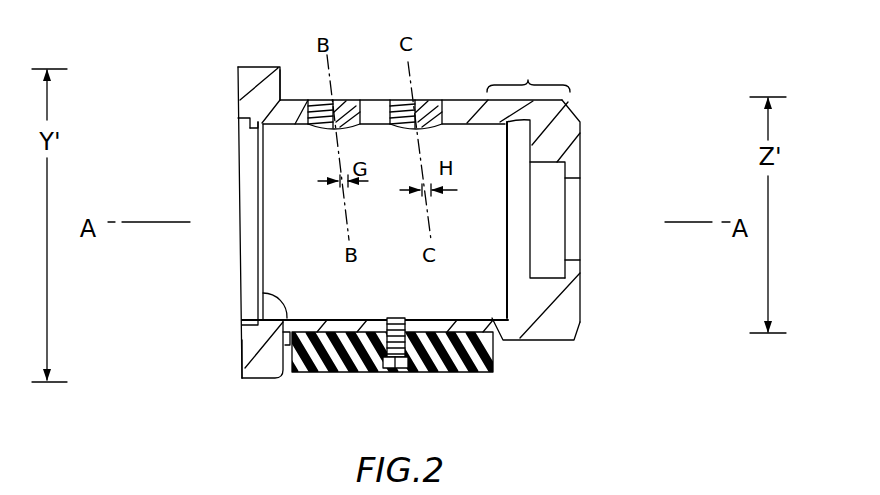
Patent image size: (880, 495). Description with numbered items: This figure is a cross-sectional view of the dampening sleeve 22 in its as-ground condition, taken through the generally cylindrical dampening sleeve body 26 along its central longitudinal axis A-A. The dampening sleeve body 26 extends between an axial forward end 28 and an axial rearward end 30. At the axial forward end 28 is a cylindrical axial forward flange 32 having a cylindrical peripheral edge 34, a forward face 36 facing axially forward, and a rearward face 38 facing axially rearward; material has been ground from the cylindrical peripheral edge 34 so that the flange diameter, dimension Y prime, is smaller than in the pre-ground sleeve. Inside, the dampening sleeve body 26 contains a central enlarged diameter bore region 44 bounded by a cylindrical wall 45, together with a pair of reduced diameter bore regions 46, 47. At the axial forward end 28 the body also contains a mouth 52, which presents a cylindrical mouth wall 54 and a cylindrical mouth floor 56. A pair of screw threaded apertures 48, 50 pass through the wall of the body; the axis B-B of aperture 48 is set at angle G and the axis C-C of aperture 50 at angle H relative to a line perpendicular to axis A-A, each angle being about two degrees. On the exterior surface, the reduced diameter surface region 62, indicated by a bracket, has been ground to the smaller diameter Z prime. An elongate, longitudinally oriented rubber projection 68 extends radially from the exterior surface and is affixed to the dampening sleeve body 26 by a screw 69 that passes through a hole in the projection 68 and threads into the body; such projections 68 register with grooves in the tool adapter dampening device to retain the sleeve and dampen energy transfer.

The dampening sleeve 22 is at (479, 63).
The dampening sleeve body 26 is at (558, 325).
The axial forward end 28 is at (237, 118).
The axial rearward end 30 is at (580, 135).
The cylindrical axial forward flange 32 is at (282, 78).
The cylindrical peripheral edge 34 is at (248, 66).
The forward face 36 is at (243, 358).
The rearward face 38 is at (288, 347).
The central enlarged diameter bore region 44 is at (280, 222).
The cylindrical wall 45 is at (262, 293).
The reduced diameter bore region 46 is at (550, 213).
The reduced diameter bore region 47 is at (578, 240).
The screw threaded aperture 48 is at (342, 110).
The screw threaded aperture 50 is at (424, 108).
The mouth 52 is at (247, 164).
The cylindrical mouth wall 54 is at (248, 131).
The cylindrical mouth floor 56 is at (240, 320).
The reduced diameter surface region 62 is at (540, 78).
The projection 68 is at (457, 362).
The screw 69 is at (395, 370).